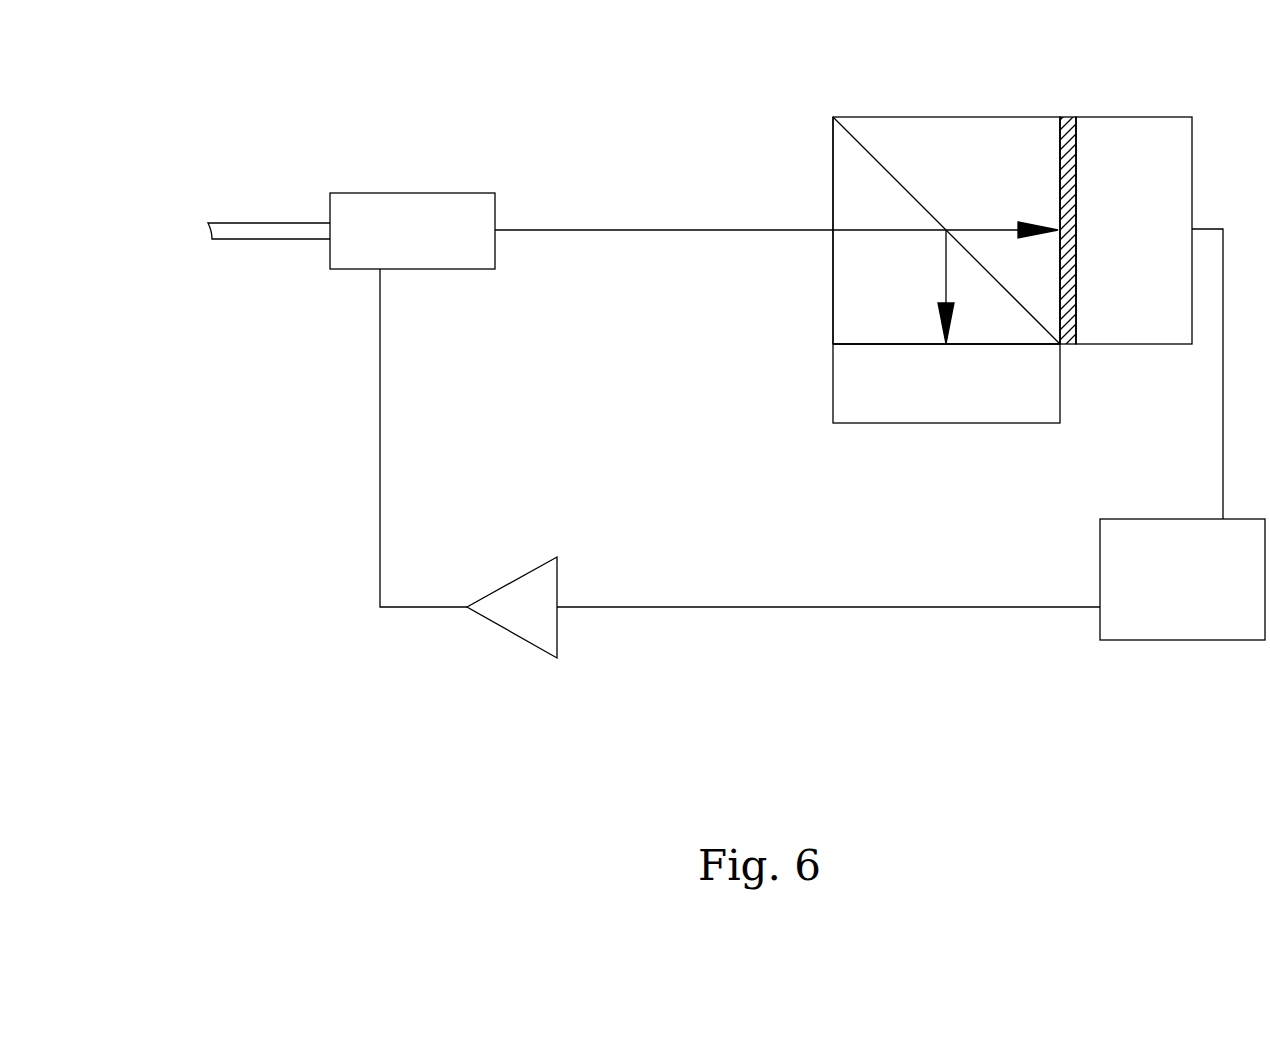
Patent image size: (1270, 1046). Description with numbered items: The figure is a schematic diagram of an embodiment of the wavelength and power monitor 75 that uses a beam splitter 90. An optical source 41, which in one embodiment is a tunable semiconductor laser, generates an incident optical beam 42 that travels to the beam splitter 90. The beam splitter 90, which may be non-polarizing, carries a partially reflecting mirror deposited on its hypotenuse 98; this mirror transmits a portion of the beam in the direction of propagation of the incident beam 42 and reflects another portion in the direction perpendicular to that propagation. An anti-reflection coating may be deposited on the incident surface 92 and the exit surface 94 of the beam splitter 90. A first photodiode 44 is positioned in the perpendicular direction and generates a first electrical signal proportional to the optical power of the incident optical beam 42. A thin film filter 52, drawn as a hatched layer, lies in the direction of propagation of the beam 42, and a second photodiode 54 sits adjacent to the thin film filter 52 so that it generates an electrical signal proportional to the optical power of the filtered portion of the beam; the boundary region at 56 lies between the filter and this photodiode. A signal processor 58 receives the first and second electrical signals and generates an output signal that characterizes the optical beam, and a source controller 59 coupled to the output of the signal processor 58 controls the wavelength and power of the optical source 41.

The optical source 41 is at (408, 192).
The incident optical beam 42 is at (619, 229).
The wavelength and power monitor 75 is at (958, 79).
The beam splitter 90 is at (932, 138).
The hypotenuse 98 is at (890, 180).
The incident surface 92 is at (832, 262).
The exit surface 94 is at (1057, 172).
The thin film filter 52 is at (1062, 128).
The second photodiode 54 is at (1135, 112).
The detector surface 56 is at (1079, 316).
The first photodiode 44 is at (832, 424).
The signal processor 58 is at (1123, 517).
The source controller 59 is at (553, 555).